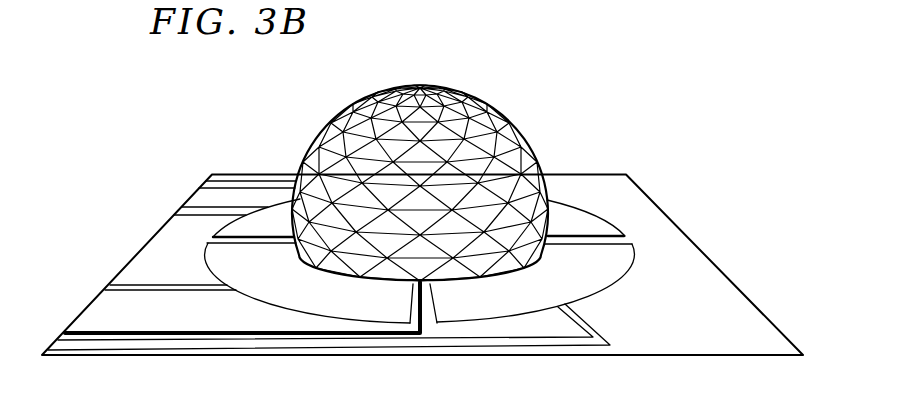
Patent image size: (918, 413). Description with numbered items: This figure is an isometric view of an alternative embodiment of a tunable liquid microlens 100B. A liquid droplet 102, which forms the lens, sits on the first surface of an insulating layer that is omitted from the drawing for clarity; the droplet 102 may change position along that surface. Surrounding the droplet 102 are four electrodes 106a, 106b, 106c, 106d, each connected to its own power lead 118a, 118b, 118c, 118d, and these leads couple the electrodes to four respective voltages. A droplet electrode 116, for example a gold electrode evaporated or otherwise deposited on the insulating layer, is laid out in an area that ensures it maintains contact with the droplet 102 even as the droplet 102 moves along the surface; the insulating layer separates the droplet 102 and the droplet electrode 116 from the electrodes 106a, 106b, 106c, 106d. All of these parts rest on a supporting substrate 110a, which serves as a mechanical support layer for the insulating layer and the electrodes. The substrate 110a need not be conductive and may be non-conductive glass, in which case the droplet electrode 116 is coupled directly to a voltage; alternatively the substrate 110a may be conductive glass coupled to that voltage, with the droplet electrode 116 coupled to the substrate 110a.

The microlens 100B is at (588, 103).
The droplet 102 is at (420, 84).
The electrode 106a is at (590, 226).
The electrode 106b is at (250, 213).
The electrode 106c is at (297, 295).
The electrode 106d is at (593, 278).
The supporting substrate 110a is at (743, 333).
The droplet electrode 116 is at (83, 332).
The power lead 118a is at (248, 185).
The power lead 118b is at (203, 210).
The power lead 118c is at (127, 287).
The power lead 118d is at (490, 343).